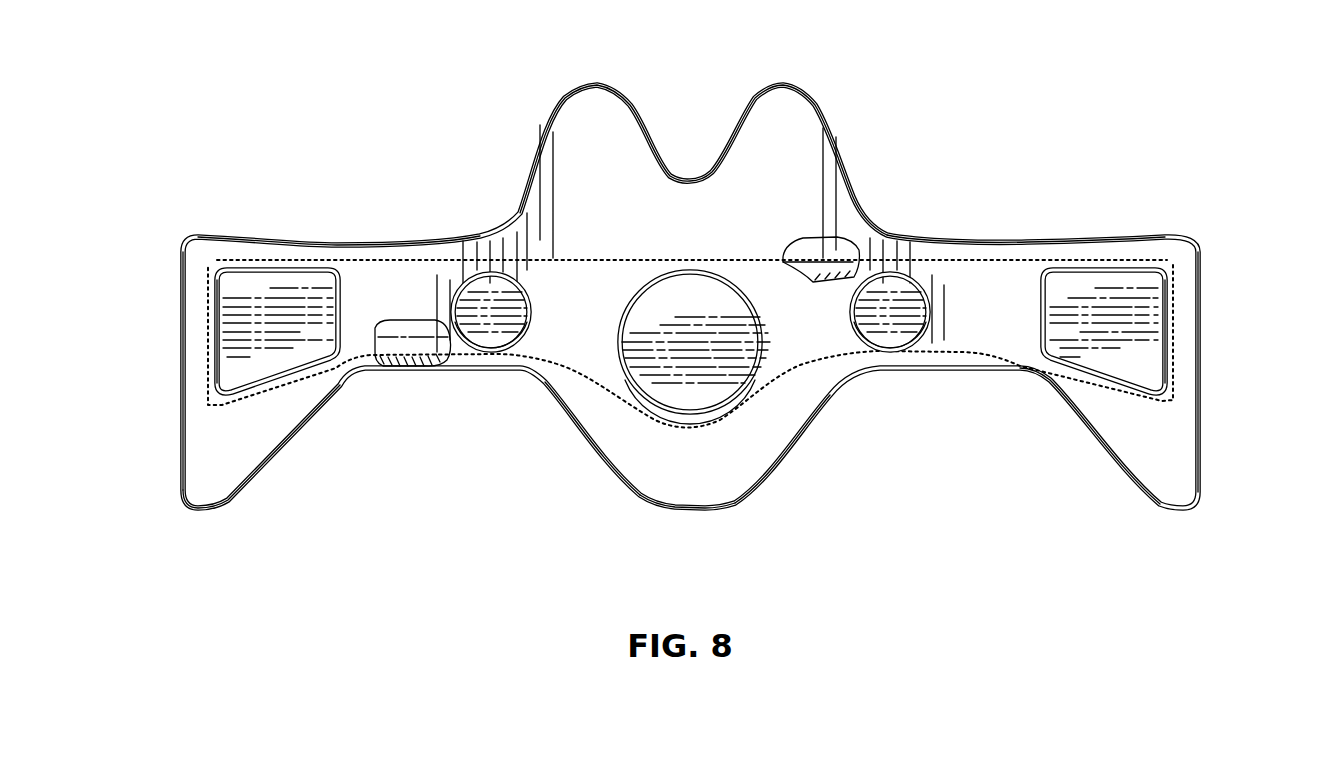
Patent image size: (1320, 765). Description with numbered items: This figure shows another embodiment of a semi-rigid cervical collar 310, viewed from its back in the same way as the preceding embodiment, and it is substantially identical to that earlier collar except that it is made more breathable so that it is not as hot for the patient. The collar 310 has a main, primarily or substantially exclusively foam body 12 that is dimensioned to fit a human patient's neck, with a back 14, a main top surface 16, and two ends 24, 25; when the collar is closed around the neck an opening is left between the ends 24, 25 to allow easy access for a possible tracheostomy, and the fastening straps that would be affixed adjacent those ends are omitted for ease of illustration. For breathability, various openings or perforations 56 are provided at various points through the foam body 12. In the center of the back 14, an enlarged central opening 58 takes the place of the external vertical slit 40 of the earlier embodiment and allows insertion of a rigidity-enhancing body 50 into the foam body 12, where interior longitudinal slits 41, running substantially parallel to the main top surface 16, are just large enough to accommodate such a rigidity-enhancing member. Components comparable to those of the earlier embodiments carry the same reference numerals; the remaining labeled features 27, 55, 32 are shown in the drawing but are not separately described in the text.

The collar 310 is at (425, 146).
The raised nose bridge portions 27 is at (672, 142).
The main top surface 16 is at (953, 240).
The foam body 12 is at (343, 253).
The rigidity-enhancing body 50 is at (243, 287).
The interior longitudinal slits 41 is at (853, 240).
The end 24 is at (183, 360).
The end 25 is at (1198, 353).
The openings or perforations 56 is at (290, 362).
The back 14 is at (243, 445).
The enlarged central opening 58 is at (730, 387).
The lower right edge portion 55 is at (1120, 365).
The bottom edge portion 32 is at (680, 507).
The external vertical slit 40 is at (717, 447).